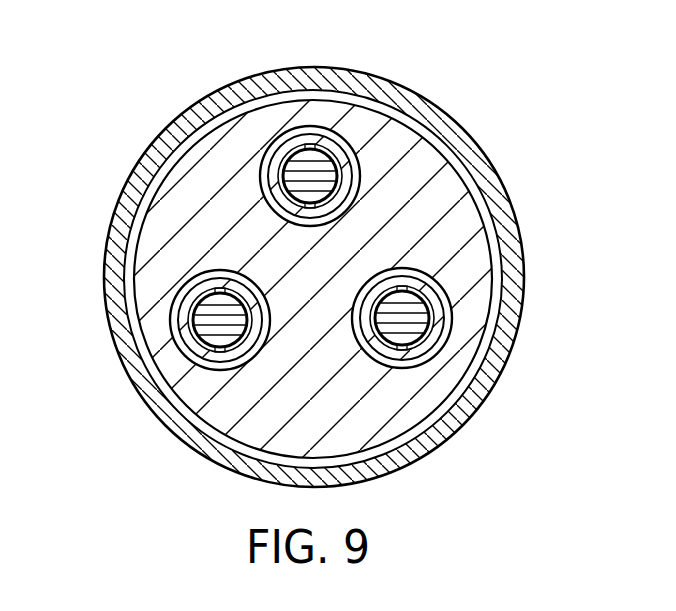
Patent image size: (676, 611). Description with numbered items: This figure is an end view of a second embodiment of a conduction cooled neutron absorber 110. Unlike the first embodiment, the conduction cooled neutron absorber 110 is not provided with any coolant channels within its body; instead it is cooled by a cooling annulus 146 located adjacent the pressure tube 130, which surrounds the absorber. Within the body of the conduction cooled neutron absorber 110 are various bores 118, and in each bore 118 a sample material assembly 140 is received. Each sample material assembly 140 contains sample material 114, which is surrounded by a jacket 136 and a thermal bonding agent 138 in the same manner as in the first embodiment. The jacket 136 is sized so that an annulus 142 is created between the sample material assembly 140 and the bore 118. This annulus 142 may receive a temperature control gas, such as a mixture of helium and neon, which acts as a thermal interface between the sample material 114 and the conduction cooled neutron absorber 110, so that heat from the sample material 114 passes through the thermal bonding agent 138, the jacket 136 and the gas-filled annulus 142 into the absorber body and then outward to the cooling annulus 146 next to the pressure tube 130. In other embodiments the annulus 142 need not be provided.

The conduction cooled neutron absorber 110 is at (222, 221).
The sample material 114 is at (405, 325).
The bore 118 is at (352, 200).
The pressure tube 130 is at (207, 99).
The jacket 136 is at (342, 158).
The thermal bonding agent 138 is at (428, 327).
The sample material assembly 140 is at (372, 283).
The annulus 142 is at (340, 124).
The cooling annulus 146 is at (128, 297).